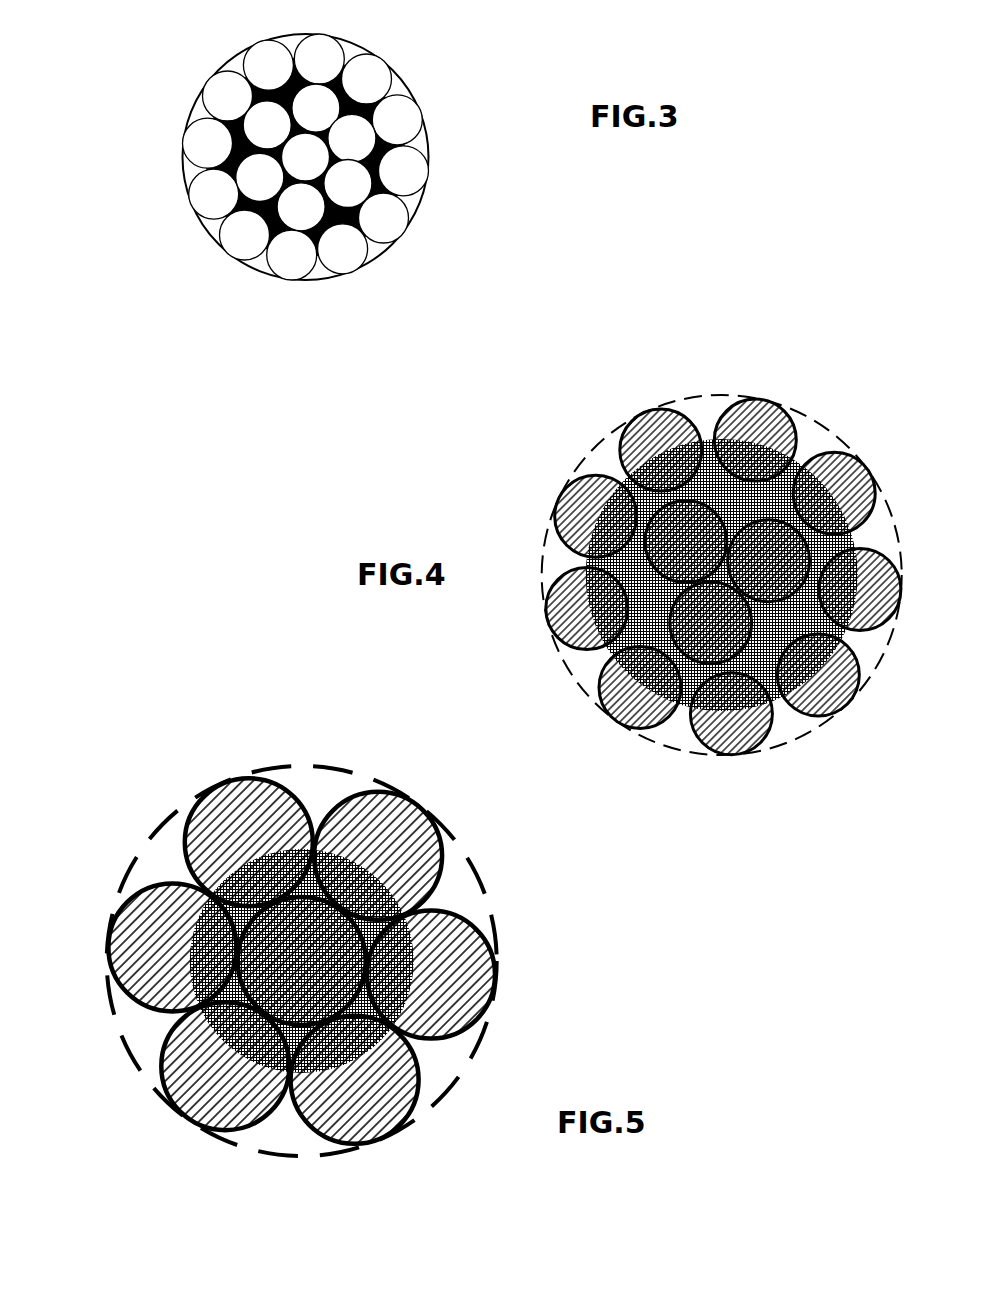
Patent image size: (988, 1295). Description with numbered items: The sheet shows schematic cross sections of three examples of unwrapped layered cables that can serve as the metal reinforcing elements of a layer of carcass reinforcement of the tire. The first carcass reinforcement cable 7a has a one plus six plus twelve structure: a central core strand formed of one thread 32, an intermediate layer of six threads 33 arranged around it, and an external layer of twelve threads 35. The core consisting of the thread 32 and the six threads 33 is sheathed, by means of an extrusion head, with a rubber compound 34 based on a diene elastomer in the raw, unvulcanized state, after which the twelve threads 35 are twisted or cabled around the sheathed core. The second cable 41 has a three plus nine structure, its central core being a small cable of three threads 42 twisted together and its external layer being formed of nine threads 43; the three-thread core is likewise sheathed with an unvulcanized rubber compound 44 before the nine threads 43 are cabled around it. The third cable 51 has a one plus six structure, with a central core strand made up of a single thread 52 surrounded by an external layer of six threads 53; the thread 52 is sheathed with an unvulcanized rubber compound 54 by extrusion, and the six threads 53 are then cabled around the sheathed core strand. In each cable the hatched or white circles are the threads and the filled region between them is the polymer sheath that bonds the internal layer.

In FIG. 3, the carcass reinforcement cable 7a is at (418, 67).
In FIG. 3, the thread 32 is at (300, 155).
In FIG. 3, the threads 33 is at (260, 182).
In FIG. 3, the rubber compound 34 is at (383, 167).
In FIG. 3, the threads 35 is at (350, 260).
In FIG. 4, the cable 41 is at (500, 532).
In FIG. 4, the threads 42 is at (830, 473).
In FIG. 4, the threads 43 is at (770, 423).
In FIG. 4, the rubber compound 44 is at (625, 605).
In FIG. 5, the cable 51 is at (209, 758).
In FIG. 5, the thread 52 is at (265, 1020).
In FIG. 5, the threads 53 is at (167, 903).
In FIG. 5, the rubber compound 54 is at (203, 1020).